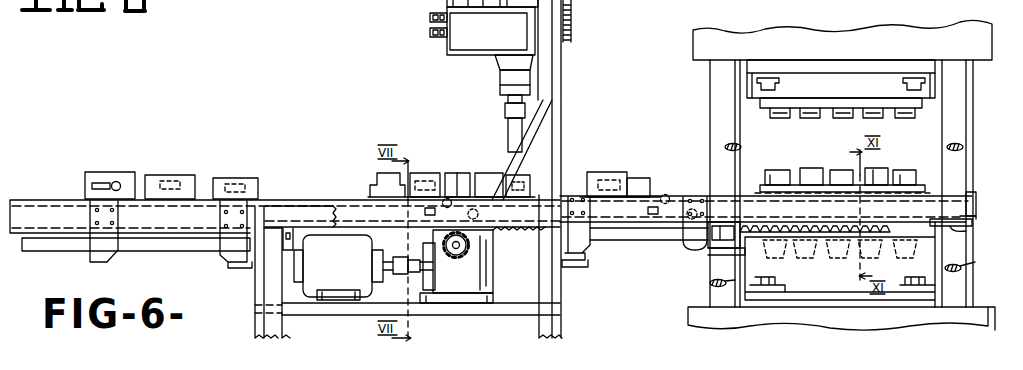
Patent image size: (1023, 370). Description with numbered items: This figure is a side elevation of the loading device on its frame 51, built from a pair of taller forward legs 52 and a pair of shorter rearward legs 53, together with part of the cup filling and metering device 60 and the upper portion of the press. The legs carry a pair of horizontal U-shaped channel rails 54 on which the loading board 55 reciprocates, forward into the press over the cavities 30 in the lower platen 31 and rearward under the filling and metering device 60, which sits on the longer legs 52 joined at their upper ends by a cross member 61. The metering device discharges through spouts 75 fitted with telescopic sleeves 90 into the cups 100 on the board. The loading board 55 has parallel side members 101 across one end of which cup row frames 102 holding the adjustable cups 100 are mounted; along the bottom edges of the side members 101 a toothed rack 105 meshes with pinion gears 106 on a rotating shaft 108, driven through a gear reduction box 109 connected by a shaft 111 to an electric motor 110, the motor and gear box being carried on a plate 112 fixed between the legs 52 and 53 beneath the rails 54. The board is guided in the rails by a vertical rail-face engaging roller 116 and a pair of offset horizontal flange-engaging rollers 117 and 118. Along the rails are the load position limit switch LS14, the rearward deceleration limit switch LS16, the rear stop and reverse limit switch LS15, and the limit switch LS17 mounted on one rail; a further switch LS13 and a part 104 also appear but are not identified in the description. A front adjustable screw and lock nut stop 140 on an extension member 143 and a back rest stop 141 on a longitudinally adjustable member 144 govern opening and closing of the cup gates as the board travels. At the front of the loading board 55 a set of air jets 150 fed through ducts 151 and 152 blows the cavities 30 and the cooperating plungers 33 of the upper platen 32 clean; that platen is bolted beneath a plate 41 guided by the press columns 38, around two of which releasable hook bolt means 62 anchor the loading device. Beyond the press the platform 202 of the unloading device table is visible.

The horizontal rails 54 is at (36, 211).
The member 144 is at (134, 246).
The frame 51 is at (248, 309).
The rearward legs 53 is at (282, 330).
The plate 112 is at (441, 306).
The back rest adjustable stop 141 is at (296, 227).
The electric motor 110 is at (338, 267).
The shaft 111 is at (413, 261).
The pinion gears 106 is at (456, 266).
The rotating shaft 108 is at (458, 247).
The gear reduction box 109 is at (487, 278).
The toothed rack 105 is at (793, 214).
The cups 100 is at (441, 160).
The vertical rail face engaging roller 116 is at (424, 212).
The horizontal rail flange engaging roller 117 is at (449, 199).
The horizontal rail flange engaging roller 118 is at (479, 214).
The forward legs 52 is at (549, 75).
The cross member 61 is at (572, 38).
The filling and metering device 60 is at (442, 55).
The spouts 75 is at (505, 118).
The telescopic sleeves 90 is at (508, 140).
The rear stop and reverse limit switch LS15 is at (122, 172).
The rearward deceleration limit switch LS16 is at (183, 175).
The load position limit switch LS14 is at (250, 177).
The limit switch LS17 is at (530, 182).
The limit switch LS13 is at (607, 172).
The platform 202 is at (651, 178).
The extension member 143 is at (612, 238).
The mounting bracket 104 is at (720, 192).
The adjustable screw and lock nut stop 140 is at (737, 221).
The releasable hook bolt means 62 is at (722, 250).
The plate 41 is at (908, 54).
The pillars 38 is at (712, 88).
The upper reciprocating platen 32 is at (852, 96).
The plungers 33 is at (840, 120).
The cup row frames 102 is at (752, 177).
The side members 101 is at (901, 176).
The loading board 55 is at (930, 223).
The air jets 150 is at (984, 203).
The ducts 151 is at (975, 218).
The ducts 152 is at (966, 232).
The lower platen 31 is at (840, 293).
The cavities 30 is at (815, 262).